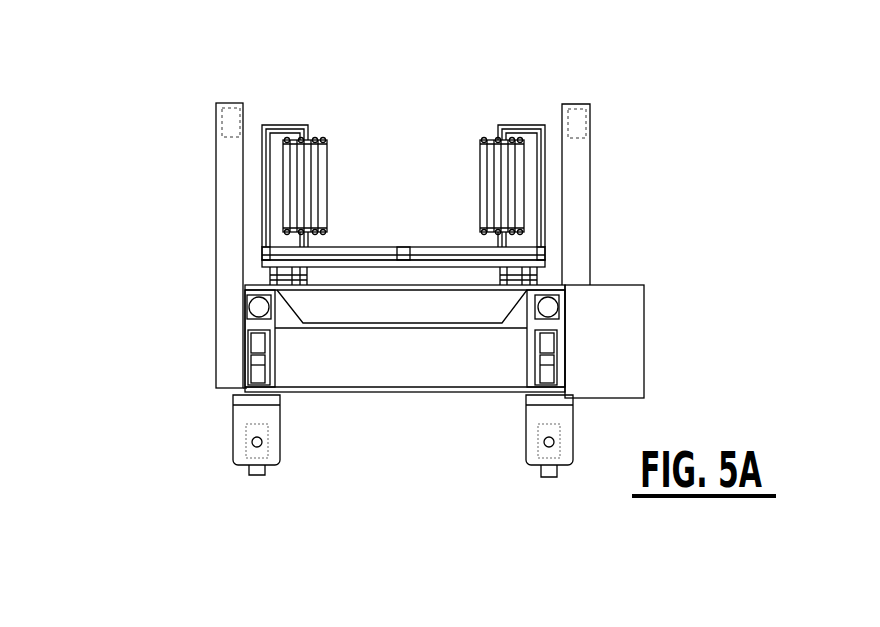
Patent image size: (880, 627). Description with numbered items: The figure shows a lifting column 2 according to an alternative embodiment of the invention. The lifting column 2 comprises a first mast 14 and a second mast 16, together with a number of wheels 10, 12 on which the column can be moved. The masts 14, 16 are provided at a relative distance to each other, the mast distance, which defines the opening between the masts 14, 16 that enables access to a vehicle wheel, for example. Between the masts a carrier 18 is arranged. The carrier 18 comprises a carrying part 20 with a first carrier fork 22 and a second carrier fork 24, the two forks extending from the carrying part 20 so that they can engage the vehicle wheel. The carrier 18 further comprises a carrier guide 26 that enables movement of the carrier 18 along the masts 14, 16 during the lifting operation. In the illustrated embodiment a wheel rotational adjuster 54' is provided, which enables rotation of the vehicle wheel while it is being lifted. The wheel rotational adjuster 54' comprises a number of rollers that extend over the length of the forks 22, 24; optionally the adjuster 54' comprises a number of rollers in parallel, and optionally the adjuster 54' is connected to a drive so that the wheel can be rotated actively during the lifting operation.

The lifting column 2 is at (668, 198).
The wheel 10 is at (222, 120).
The wheel 12 is at (255, 477).
The first mast 14 is at (220, 395).
The second mast 16 is at (519, 399).
The carrier 18 is at (452, 110).
The carrying part 20 is at (486, 102).
The first carrier fork 22 is at (300, 132).
The second carrier fork 24 is at (510, 138).
The carrier guide 26 is at (560, 262).
The wheel rotational adjuster 54' is at (353, 186).